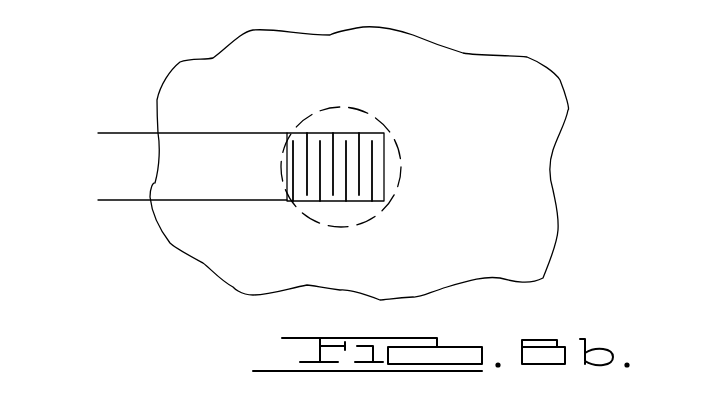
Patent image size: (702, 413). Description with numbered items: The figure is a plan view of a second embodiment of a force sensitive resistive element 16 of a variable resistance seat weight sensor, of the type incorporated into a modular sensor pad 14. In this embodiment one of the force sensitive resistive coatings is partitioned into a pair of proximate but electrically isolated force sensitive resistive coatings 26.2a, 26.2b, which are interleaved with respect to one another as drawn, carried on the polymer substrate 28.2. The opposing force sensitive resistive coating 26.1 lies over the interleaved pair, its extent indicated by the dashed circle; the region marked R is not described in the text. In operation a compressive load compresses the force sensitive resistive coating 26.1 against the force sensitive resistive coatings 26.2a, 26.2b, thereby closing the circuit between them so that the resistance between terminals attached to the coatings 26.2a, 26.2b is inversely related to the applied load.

The modular sensor pad 14 is at (407, 163).
The polymer substrate 28.2 is at (549, 77).
The direction of movement R is at (190, 166).
The force sensitive resistive coating 26.1 is at (312, 212).
The force sensitive resistive element 16 is at (270, 208).
The force sensitive resistive coating 26.2a is at (352, 133).
The force sensitive resistive coating 26.2b is at (357, 203).